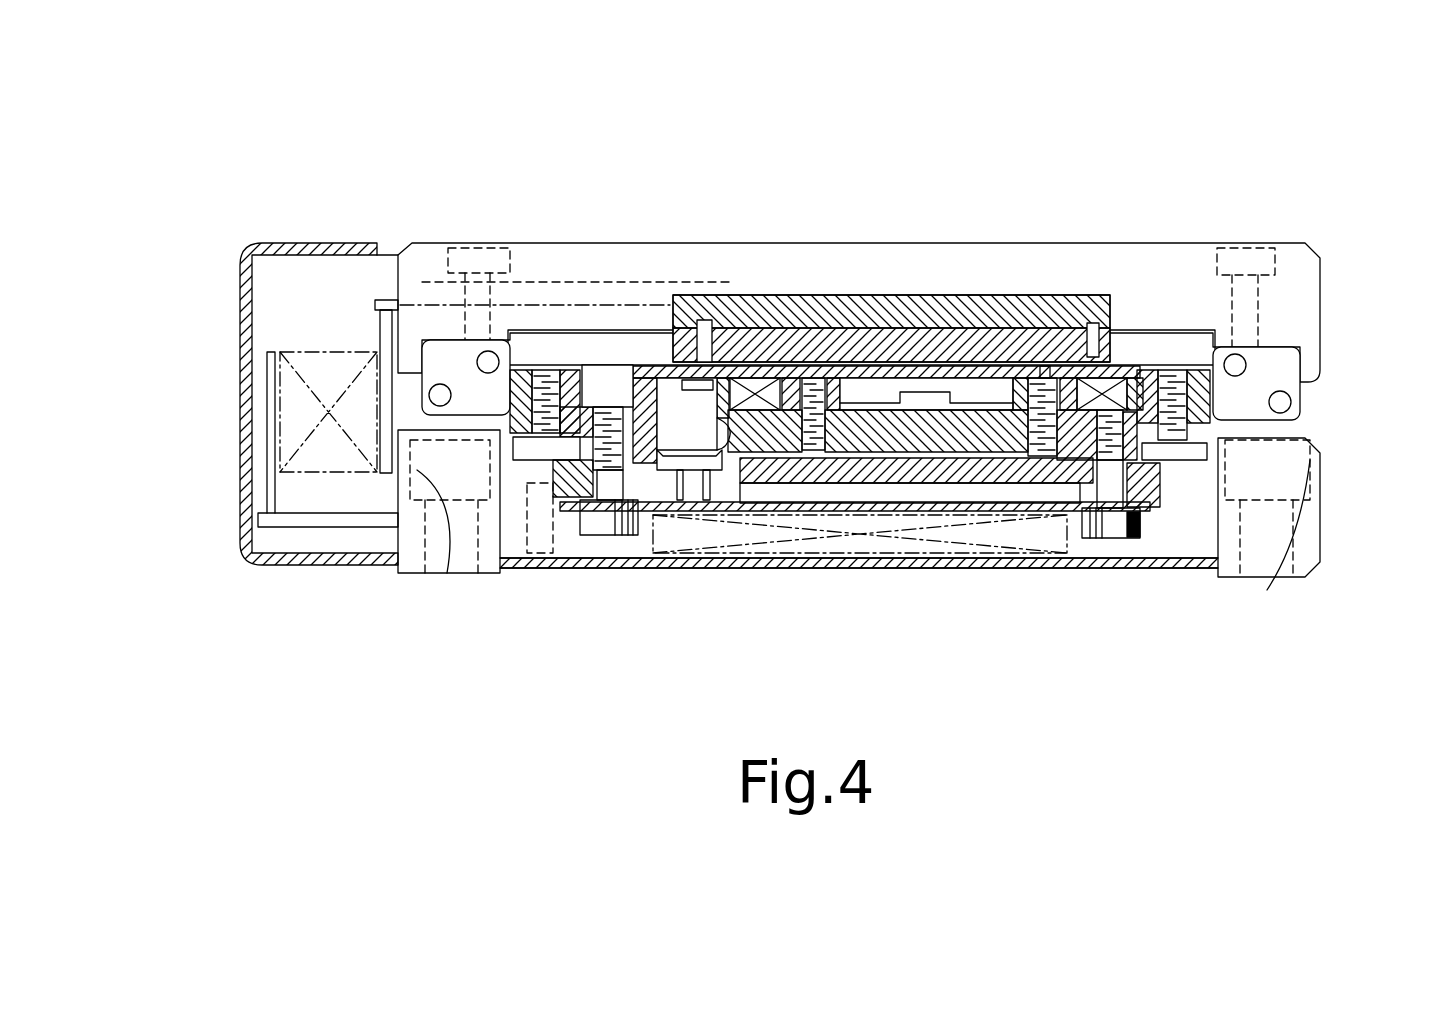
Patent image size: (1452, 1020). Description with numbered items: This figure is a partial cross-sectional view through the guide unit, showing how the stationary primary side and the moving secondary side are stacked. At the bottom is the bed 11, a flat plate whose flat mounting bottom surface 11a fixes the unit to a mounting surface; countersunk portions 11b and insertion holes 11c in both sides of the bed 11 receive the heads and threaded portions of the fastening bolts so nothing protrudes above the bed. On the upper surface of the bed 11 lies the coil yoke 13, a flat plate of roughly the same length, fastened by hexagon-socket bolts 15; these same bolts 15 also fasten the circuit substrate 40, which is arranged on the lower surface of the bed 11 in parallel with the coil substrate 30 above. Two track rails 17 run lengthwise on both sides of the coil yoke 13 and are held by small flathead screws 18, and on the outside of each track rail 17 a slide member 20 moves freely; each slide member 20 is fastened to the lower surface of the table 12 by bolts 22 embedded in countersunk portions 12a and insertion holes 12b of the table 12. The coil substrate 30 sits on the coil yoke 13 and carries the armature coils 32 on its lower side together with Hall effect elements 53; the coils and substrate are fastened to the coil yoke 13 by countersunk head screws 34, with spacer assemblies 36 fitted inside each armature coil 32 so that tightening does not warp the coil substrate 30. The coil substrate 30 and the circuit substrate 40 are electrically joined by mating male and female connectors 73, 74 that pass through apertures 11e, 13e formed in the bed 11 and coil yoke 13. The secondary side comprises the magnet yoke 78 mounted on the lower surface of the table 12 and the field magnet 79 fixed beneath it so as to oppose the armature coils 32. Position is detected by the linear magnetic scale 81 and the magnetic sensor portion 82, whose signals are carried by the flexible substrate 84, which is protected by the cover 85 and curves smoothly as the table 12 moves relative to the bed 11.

The bed 11 is at (1324, 510).
The flat mounting bottom surface 11a is at (404, 570).
The countersunk portions 11b is at (443, 570).
The insertion holes 11c is at (443, 570).
The aperture 11e is at (668, 520).
The table 12 is at (1308, 243).
The countersunk portions 12a is at (472, 313).
The insertion holes 12b is at (412, 252).
The coil yoke 13 is at (982, 447).
The aperture 13e is at (750, 460).
The bolts 15 is at (603, 522).
The track rails 17 is at (570, 362).
The small flathead screws 18 is at (530, 462).
The slide member 20 is at (417, 394).
The bolts 22 is at (472, 250).
The coil substrate 30 is at (661, 355).
The armature coils 32 is at (1113, 372).
The countersunk head screws 34 is at (795, 376).
The spacer assemblies 36 is at (857, 386).
The circuit substrate 40 is at (840, 497).
The Hall effect elements 53 is at (692, 372).
The male connector 73 is at (692, 458).
The female connector 74 is at (712, 492).
The magnet yoke 78 is at (990, 335).
The field magnet 79 is at (936, 330).
The linear magnetic scale 81 is at (607, 377).
The magnetic sensor portion 82 is at (633, 340).
The flexible substrate 84 is at (290, 437).
The cover 85 is at (247, 297).